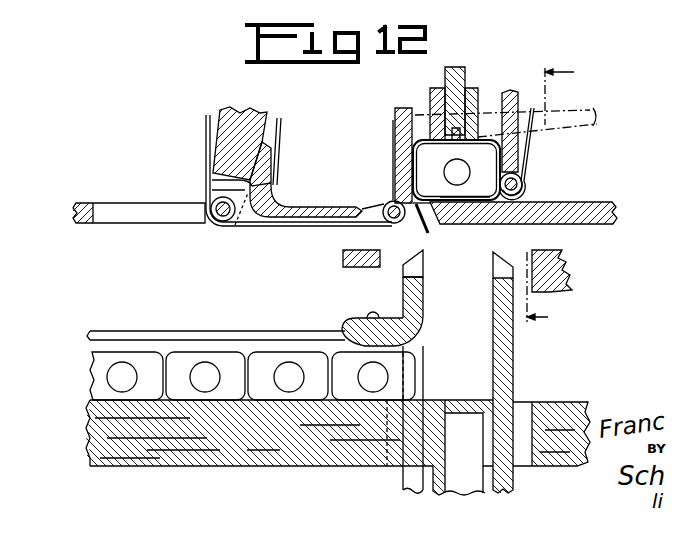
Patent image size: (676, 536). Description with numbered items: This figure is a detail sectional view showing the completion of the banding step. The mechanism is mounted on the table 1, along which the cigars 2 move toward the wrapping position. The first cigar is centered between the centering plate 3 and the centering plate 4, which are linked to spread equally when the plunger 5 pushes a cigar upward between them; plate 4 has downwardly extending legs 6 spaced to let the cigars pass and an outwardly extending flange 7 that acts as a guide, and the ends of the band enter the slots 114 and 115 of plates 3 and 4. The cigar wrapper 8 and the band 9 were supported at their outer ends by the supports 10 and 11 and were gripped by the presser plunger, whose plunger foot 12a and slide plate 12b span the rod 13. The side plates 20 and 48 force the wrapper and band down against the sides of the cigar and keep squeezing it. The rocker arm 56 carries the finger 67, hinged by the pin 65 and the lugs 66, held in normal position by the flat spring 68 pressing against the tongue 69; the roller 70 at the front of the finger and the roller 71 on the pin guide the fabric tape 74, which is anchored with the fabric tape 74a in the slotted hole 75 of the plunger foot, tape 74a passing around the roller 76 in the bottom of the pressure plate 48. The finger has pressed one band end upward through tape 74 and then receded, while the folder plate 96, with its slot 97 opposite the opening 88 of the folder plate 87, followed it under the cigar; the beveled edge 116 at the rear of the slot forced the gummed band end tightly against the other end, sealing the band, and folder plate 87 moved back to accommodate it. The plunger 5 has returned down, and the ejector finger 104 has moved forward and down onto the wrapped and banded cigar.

The table 1 is at (208, 467).
The cigars 2 is at (278, 279).
The centering plate 3 is at (493, 320).
The centering plate 4 is at (424, 303).
The plunger 5 is at (470, 404).
The downwardly extending legs 6 is at (397, 425).
The outwardly extending flange 7 is at (397, 318).
The cigar wrapper 8 is at (450, 196).
The band 9 is at (490, 200).
The support 10 is at (343, 258).
The support 11 is at (563, 250).
The plunger foot 12a is at (473, 88).
The slide plate 12b is at (459, 66).
The rod 13 is at (562, 197).
The side plate 20 is at (399, 108).
The pressure plate 48 is at (510, 92).
The rocker arm 56 is at (250, 112).
The pin 65 is at (211, 222).
The lugs 66 is at (212, 181).
The finger 67 is at (322, 211).
The flat spring 68 is at (279, 122).
The tongue 69 is at (272, 158).
The roller 70 is at (388, 203).
The roller 71 is at (236, 226).
The fabric tape 74 is at (206, 120).
The fabric tape 74a is at (572, 147).
The slotted hole 75 is at (455, 128).
The roller 76 is at (523, 175).
The folder plate 87 is at (92, 203).
The opening 88 is at (137, 211).
The folder plate 96 is at (585, 203).
The slot 97 is at (432, 228).
The ejector finger 104 is at (599, 116).
The slot 114 is at (501, 264).
The slot 115 is at (407, 268).
The beveled edge 116 is at (426, 222).